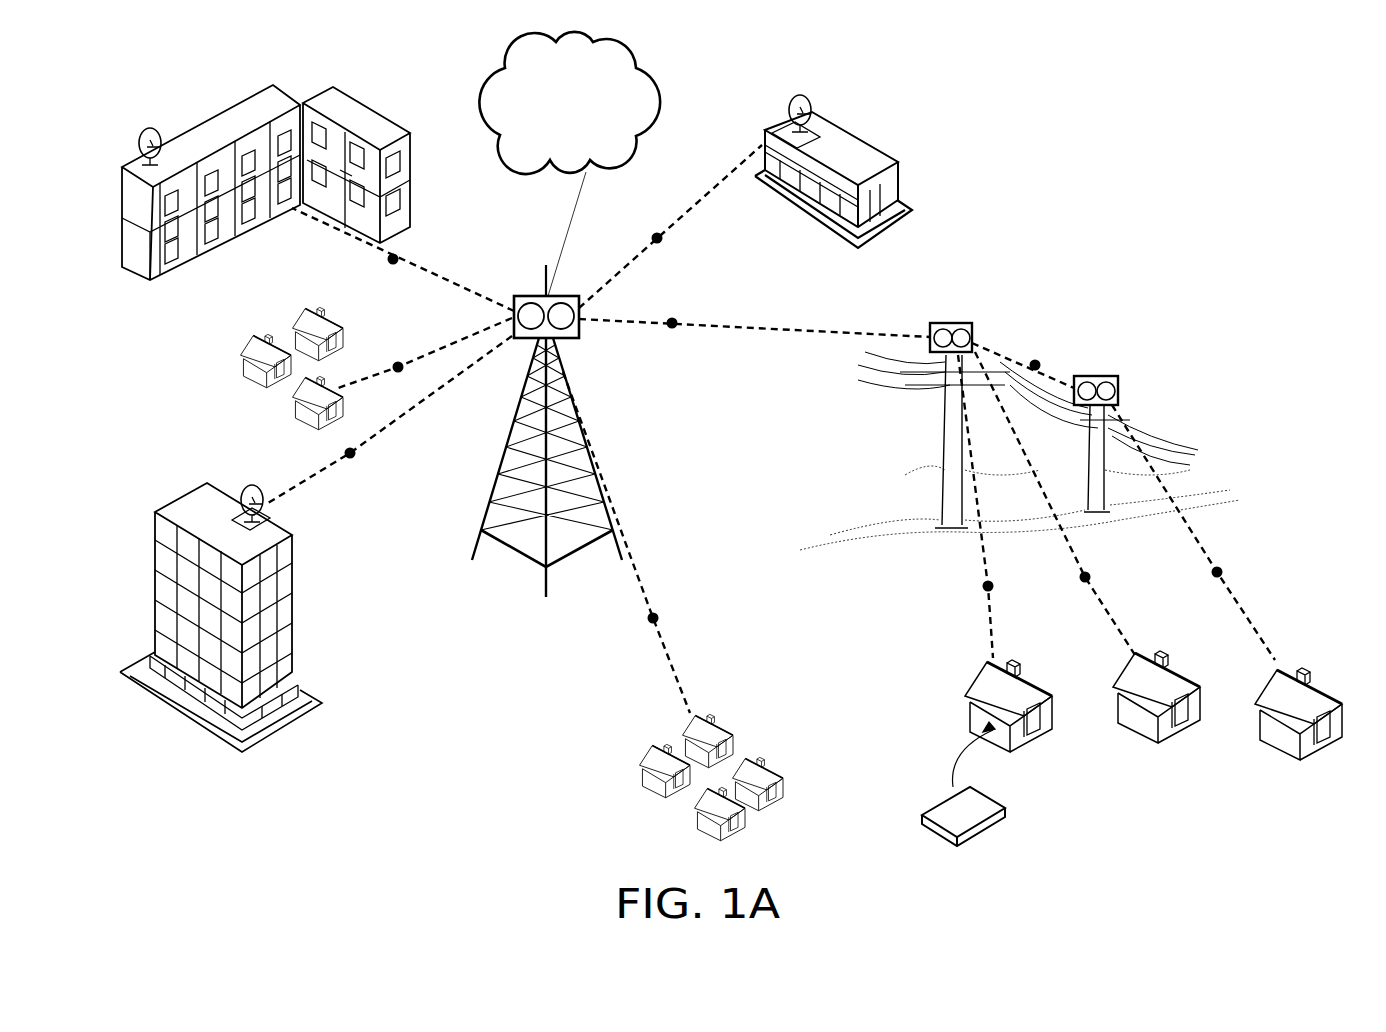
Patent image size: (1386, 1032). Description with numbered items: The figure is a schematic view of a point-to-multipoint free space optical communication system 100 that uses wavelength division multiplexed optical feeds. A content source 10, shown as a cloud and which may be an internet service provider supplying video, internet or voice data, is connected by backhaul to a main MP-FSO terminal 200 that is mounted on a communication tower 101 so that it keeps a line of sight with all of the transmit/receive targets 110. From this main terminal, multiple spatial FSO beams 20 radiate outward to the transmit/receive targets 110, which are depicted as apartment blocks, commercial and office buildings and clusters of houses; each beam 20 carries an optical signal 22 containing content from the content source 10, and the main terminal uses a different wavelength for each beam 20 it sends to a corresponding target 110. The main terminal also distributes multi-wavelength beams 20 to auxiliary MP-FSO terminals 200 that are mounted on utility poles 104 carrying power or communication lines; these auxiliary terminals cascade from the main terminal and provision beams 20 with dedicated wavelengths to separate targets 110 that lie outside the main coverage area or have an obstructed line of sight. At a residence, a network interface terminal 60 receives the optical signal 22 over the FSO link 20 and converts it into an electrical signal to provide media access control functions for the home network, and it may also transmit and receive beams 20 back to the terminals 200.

The content source 10 is at (584, 126).
The free space optical beam 20 is at (362, 246).
The optical signal 22 is at (398, 258).
The network interface terminal 60 is at (921, 824).
The point-to-multipoint free space optical communication system 100 is at (1024, 98).
The communication tower 101 is at (482, 545).
The utility pole 104 is at (942, 452).
The transmit/receive target 110 is at (152, 128).
The MP-FSO terminal 200 is at (1100, 376).